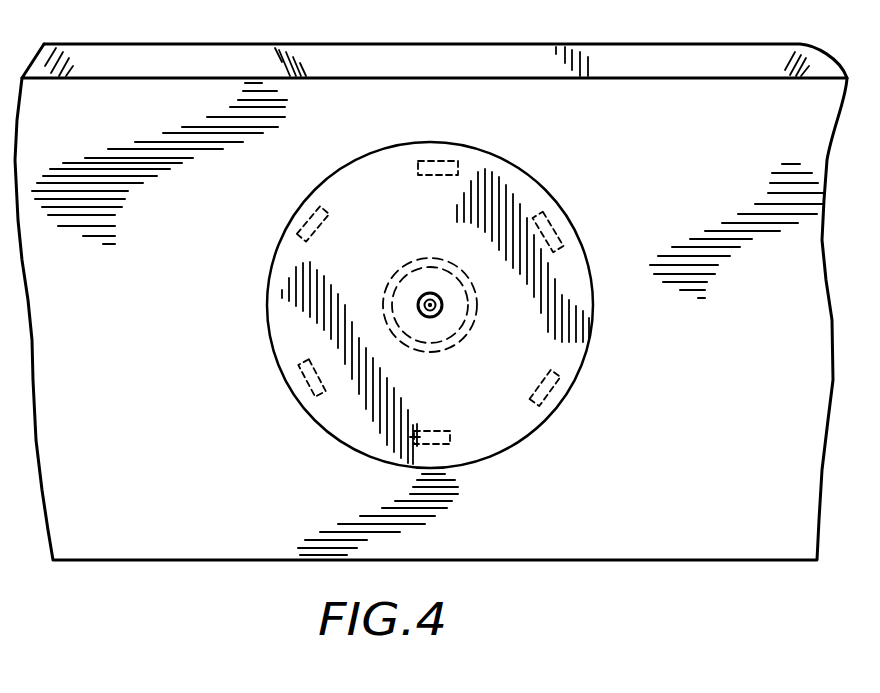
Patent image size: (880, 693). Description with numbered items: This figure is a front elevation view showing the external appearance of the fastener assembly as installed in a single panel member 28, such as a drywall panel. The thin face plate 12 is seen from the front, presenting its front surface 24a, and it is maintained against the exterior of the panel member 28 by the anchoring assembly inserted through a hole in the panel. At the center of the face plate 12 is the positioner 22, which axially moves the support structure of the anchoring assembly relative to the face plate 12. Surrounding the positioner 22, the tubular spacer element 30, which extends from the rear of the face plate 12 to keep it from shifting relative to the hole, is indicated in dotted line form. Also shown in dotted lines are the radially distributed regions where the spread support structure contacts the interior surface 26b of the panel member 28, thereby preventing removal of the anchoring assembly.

The single panel member 28 is at (722, 153).
The face plate 12 is at (577, 283).
The tubular spacer element 30 is at (472, 276).
The positioner 22 is at (442, 307).
The interior surface 26b is at (316, 362).
The front surface 24a is at (463, 421).